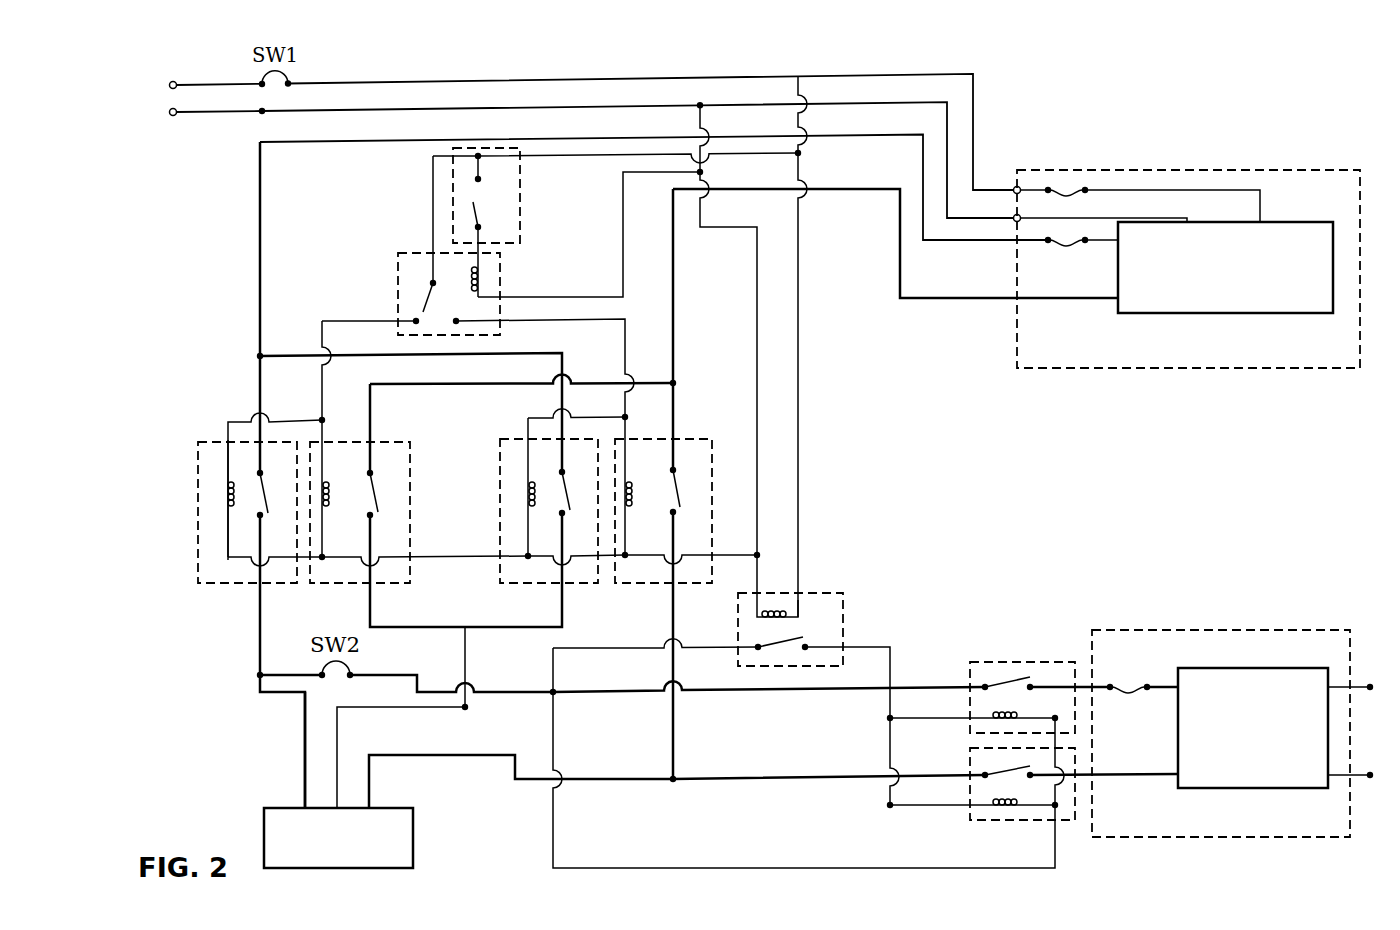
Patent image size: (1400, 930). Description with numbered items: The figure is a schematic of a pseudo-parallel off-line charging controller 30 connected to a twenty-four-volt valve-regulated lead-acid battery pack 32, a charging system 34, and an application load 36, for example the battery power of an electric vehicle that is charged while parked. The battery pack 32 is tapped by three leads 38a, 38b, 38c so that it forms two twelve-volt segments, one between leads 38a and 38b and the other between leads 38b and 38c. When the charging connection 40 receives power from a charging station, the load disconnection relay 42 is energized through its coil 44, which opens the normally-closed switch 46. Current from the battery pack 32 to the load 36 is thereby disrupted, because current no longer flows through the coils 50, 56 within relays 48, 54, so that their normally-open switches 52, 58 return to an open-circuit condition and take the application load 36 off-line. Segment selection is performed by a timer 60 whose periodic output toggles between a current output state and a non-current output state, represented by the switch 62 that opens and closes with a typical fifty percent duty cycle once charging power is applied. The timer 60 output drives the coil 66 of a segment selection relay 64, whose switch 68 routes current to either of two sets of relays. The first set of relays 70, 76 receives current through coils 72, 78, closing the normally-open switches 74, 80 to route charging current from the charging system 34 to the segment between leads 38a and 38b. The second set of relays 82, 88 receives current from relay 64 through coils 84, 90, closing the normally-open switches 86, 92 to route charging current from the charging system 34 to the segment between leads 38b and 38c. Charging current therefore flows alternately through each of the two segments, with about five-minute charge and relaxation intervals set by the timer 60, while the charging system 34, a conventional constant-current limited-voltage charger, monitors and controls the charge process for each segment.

The pseudo-parallel charging controller 30 is at (1198, 90).
The battery pack 32 is at (413, 840).
The charging system 34 is at (1105, 370).
The application load 36 is at (1228, 628).
The lead 38a is at (369, 793).
The lead 38b is at (337, 757).
The lead 38c is at (305, 772).
The charging connection 40 is at (189, 96).
The load disconnection relay 42 is at (820, 633).
The coil 44 is at (778, 612).
The normally-closed switch 46 is at (781, 645).
The relay 48 is at (986, 677).
The coil 50 is at (997, 718).
The normally-open switch 52 is at (1025, 680).
The relay 54 is at (982, 804).
The relay coil 56 is at (1012, 808).
The normally-open switch 58 is at (1028, 766).
The timer 60 is at (487, 195).
The switch 62 is at (473, 203).
The segment selection relay 64 is at (441, 281).
The coil 66 is at (481, 277).
The switch 68 is at (428, 302).
The relay 70 is at (683, 480).
The coil 72 is at (633, 490).
The normally-open switch 74 is at (678, 490).
The relay 76 is at (527, 521).
The coil 78 is at (530, 490).
The normally-open switch 80 is at (566, 500).
The relay 82 is at (362, 514).
The coil 84 is at (327, 480).
The normally-open switch 86 is at (375, 493).
The relay 88 is at (213, 511).
The coil 90 is at (228, 495).
The normally-open switch 92 is at (265, 500).